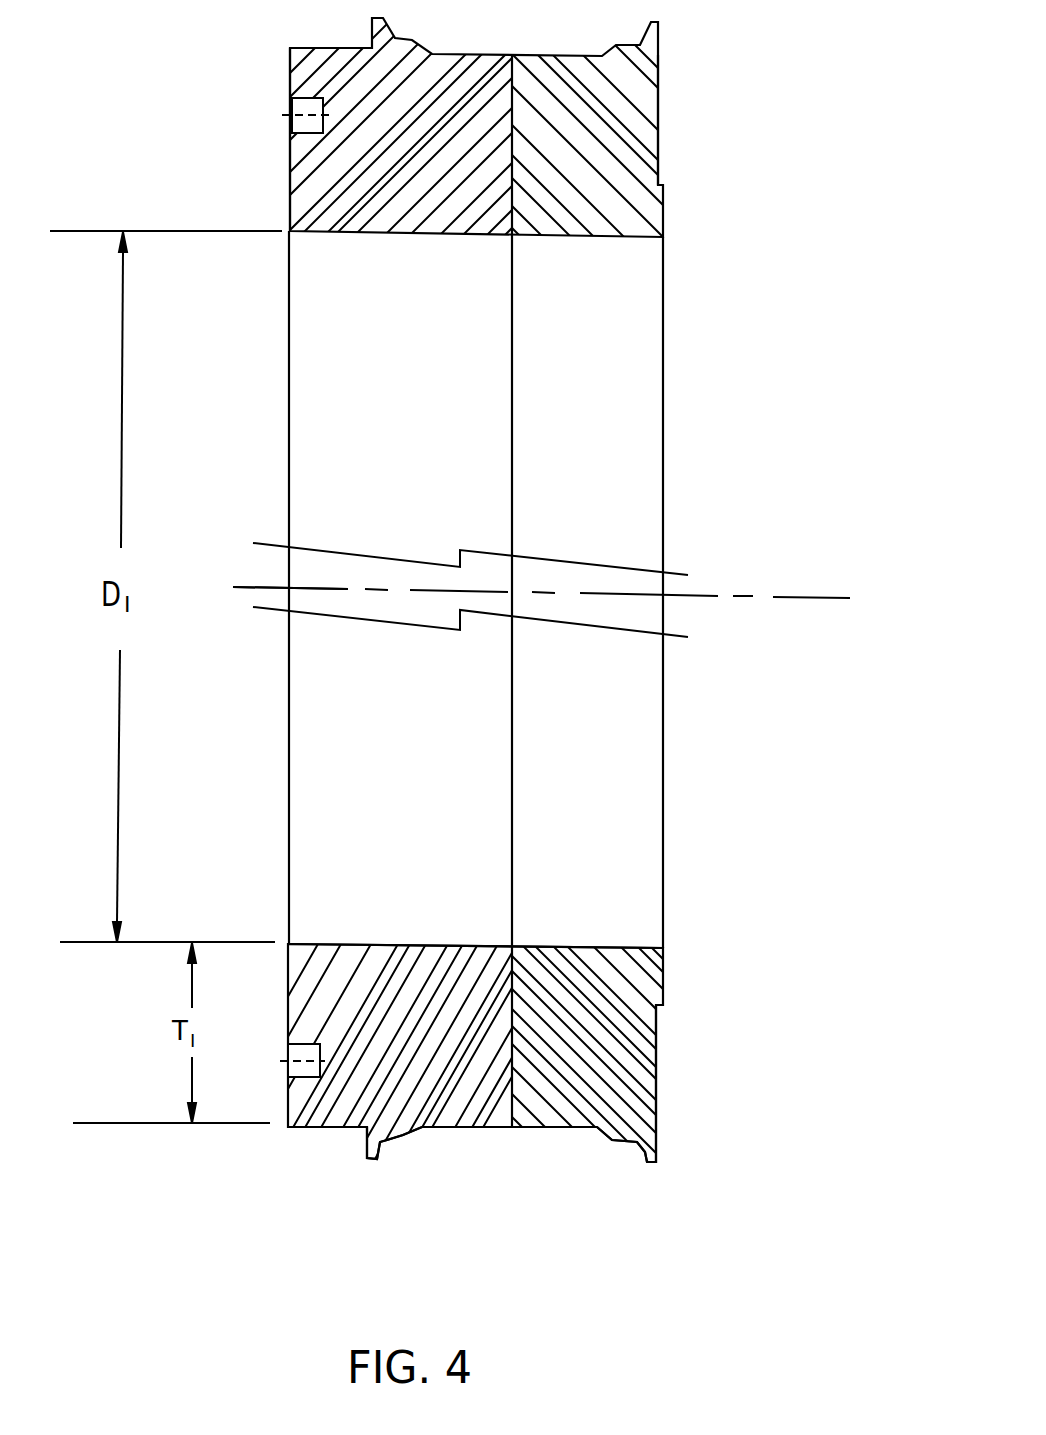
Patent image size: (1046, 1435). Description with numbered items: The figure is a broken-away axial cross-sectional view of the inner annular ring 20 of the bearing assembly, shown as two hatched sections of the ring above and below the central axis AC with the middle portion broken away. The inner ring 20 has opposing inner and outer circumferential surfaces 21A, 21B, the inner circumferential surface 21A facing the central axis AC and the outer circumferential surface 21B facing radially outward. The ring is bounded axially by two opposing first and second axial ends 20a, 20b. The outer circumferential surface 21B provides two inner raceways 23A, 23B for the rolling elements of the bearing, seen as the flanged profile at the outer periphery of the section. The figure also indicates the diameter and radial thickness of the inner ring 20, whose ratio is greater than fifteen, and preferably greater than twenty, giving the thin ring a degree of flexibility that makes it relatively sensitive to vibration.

The inner annular ring 20 is at (185, 100).
The first axial end 20a is at (288, 157).
The second axial end 20b is at (660, 137).
The inner circumferential surface 21A is at (438, 929).
The outer circumferential surface 21B is at (499, 1141).
The first inner raceway 23A is at (388, 1138).
The second inner raceway 23B is at (595, 1137).
The central axis AC is at (813, 597).